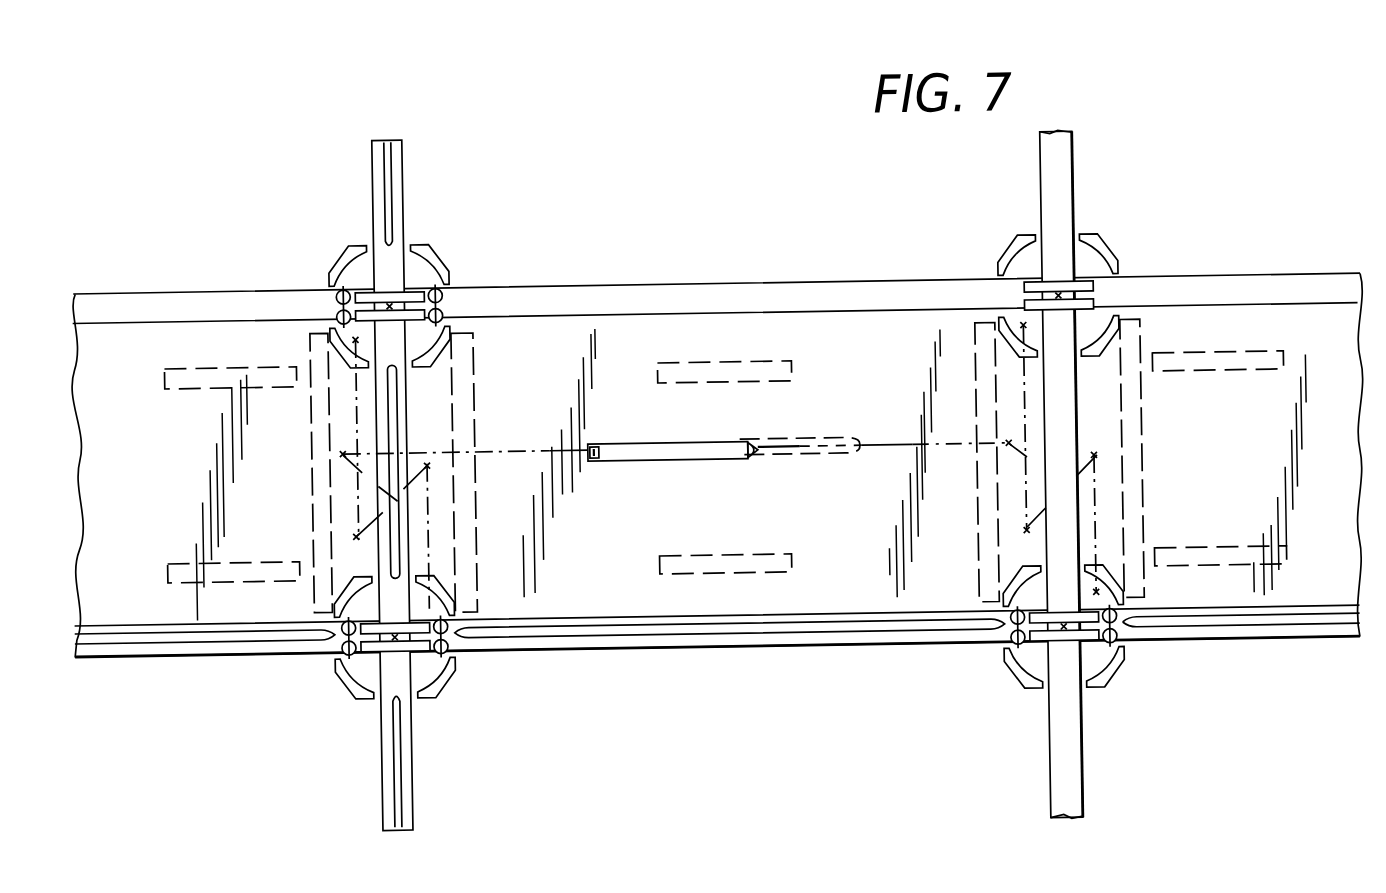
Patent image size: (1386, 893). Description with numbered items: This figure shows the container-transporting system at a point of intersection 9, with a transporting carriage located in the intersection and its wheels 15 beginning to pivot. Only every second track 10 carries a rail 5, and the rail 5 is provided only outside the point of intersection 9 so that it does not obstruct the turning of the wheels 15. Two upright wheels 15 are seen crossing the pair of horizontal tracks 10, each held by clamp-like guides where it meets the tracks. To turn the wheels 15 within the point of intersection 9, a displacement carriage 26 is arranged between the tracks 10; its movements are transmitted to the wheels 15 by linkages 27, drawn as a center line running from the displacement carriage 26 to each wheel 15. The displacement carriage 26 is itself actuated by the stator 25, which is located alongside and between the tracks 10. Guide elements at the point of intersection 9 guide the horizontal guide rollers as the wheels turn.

The rail 5 is at (825, 632).
The point of intersection 9 is at (1032, 657).
The track 10 is at (899, 643).
The wheel 15 is at (1086, 284).
The stator 25 is at (810, 453).
The displacement carriage 26 is at (638, 467).
The linkage 27 is at (900, 448).